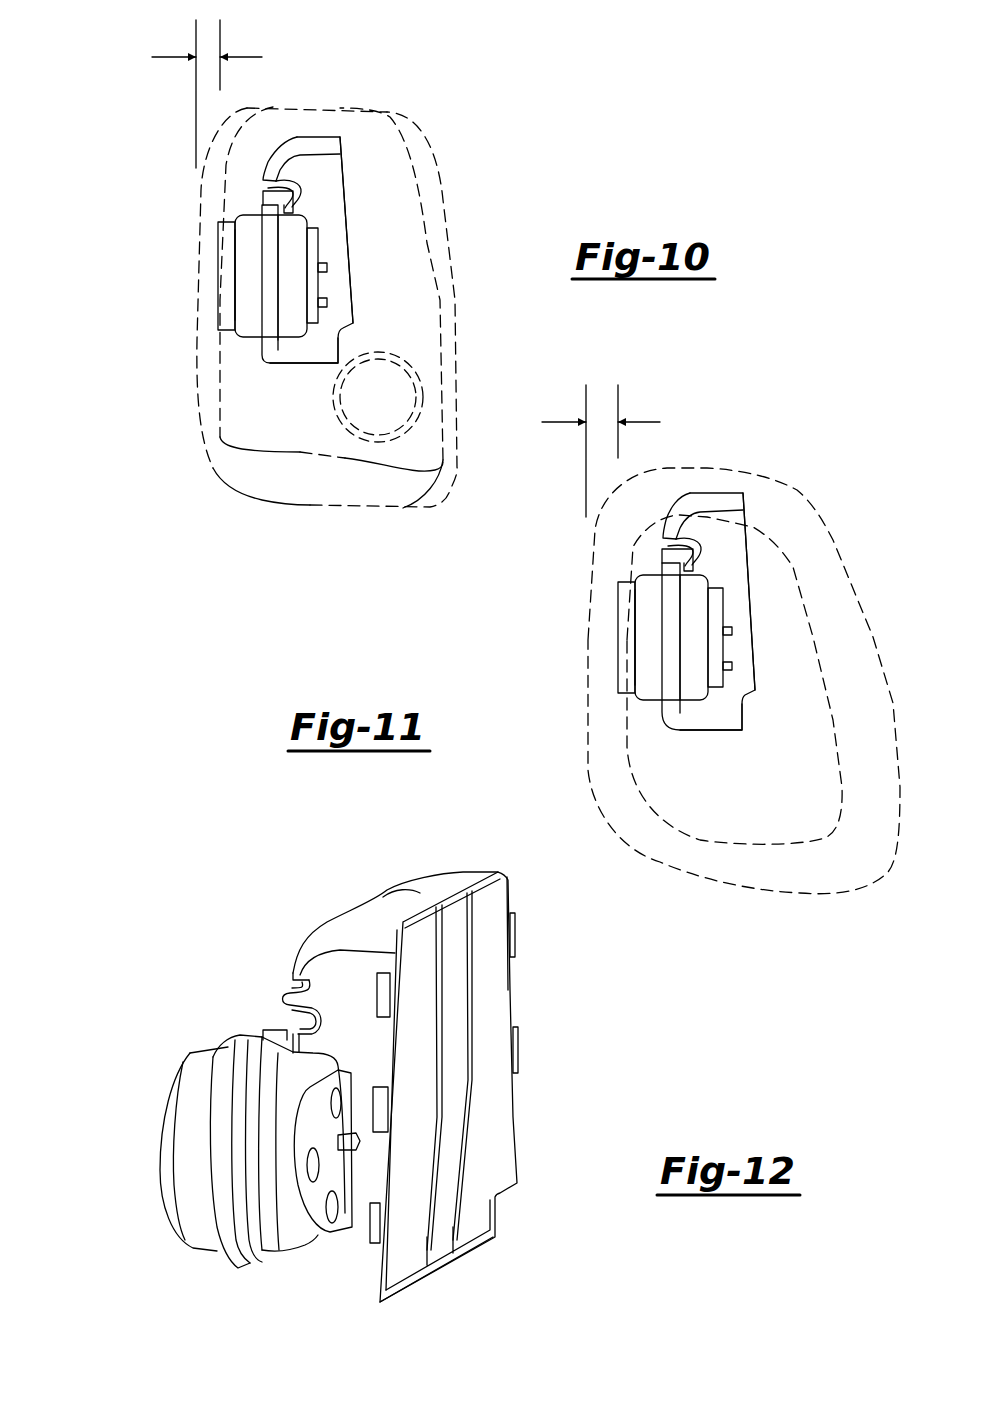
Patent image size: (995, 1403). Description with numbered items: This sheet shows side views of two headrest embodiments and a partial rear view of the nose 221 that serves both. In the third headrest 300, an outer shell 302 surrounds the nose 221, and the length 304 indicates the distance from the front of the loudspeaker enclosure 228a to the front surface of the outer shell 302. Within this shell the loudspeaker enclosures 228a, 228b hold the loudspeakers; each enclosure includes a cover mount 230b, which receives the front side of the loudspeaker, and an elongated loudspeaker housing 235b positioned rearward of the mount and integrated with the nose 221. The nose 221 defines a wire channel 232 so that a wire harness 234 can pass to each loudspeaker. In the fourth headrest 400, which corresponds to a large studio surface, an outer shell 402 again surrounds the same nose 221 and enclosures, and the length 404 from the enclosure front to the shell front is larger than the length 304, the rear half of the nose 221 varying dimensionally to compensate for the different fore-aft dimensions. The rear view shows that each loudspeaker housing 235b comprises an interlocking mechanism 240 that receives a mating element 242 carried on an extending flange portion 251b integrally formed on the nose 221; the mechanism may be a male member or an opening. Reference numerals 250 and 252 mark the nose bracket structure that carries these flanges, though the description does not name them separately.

In FIG. 10, the nose 221 is at (318, 137).
In FIG. 11, the nose 221 is at (721, 493).
In FIG. 12, the nose 221 is at (441, 884).
In FIG. 10, the loudspeaker enclosure 228a is at (183, 280).
In FIG. 11, the loudspeaker enclosure 228a is at (675, 624).
In FIG. 12, the loudspeaker enclosure 228b is at (157, 1090).
In FIG. 10, the cover mount 230b is at (250, 320).
In FIG. 11, the cover mount 230b is at (650, 683).
In FIG. 12, the cover mount 230b is at (197, 1212).
In FIG. 10, the wire channel 232 is at (256, 187).
In FIG. 11, the wire channel 232 is at (661, 545).
In FIG. 12, the wire harness 234 is at (290, 993).
In FIG. 10, the loudspeaker housing 235b is at (291, 317).
In FIG. 11, the loudspeaker housing 235b is at (693, 670).
In FIG. 12, the loudspeaker housing 235b is at (260, 1223).
In FIG. 12, the interlocking mechanism 240 is at (317, 1209).
In FIG. 12, the mating element 242 is at (363, 1142).
In FIG. 10, the bracket 250 is at (343, 352).
In FIG. 11, the bracket 250 is at (747, 718).
In FIG. 12, the bracket 250 is at (472, 1208).
In FIG. 12, the extending flange portion 251b is at (332, 1168).
In FIG. 10, the bracket wall 252 is at (357, 322).
In FIG. 11, the bracket wall 252 is at (759, 682).
In FIG. 12, the bracket wall 252 is at (429, 1280).
In FIG. 10, the third headrest 300 is at (447, 107).
In FIG. 10, the outer shell 302 is at (273, 100).
In FIG. 10, the length 304 is at (178, 103).
In FIG. 11, the fourth headrest 400 is at (835, 458).
In FIG. 11, the outer shell 402 is at (833, 540).
In FIG. 11, the length 404 is at (633, 393).